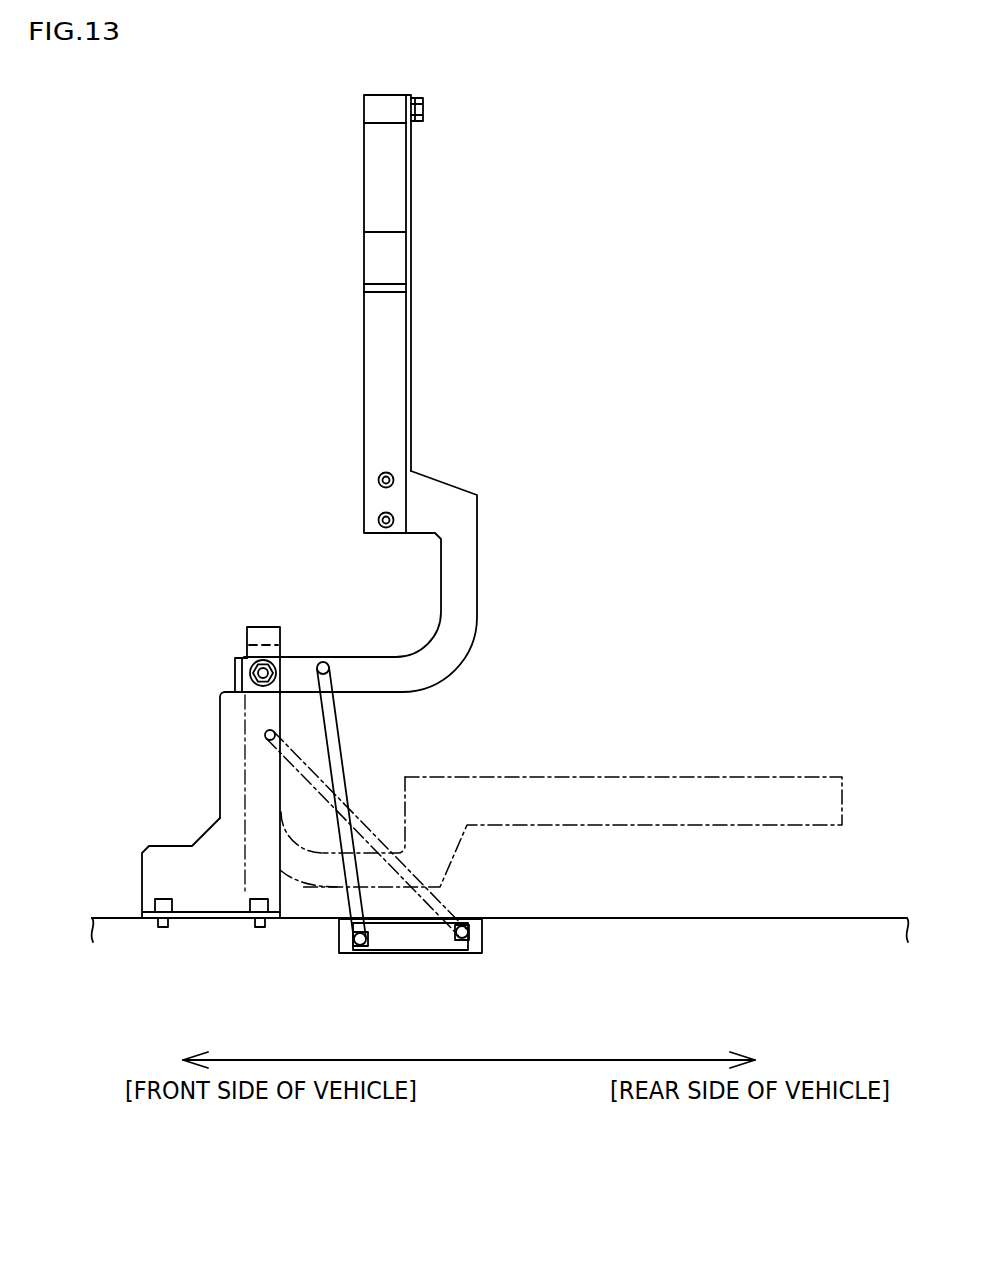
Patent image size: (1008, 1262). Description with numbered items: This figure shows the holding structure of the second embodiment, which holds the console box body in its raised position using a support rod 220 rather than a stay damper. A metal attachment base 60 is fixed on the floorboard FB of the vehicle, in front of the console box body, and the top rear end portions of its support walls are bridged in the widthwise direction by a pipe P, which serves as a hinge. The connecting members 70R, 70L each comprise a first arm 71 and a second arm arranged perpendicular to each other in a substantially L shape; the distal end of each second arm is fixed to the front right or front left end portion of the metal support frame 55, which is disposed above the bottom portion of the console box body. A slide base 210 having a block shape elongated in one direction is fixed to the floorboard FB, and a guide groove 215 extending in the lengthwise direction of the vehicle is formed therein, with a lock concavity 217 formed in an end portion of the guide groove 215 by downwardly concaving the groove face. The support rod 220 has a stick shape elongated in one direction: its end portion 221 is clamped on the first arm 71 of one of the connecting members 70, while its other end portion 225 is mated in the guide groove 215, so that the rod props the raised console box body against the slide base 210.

The support frame 55 is at (387, 317).
The connecting member 70R is at (460, 581).
The connecting member 70L is at (462, 555).
The connecting member 70 is at (308, 819).
The first arm 71 is at (250, 765).
The attachment base 60 is at (160, 873).
The pipe P is at (262, 672).
The end portion 221 is at (313, 690).
The support rod 220 is at (365, 826).
The end portion 225 is at (468, 930).
The slide base 210 is at (463, 945).
The guide groove 215 is at (410, 933).
The lock concavity 217 is at (345, 938).
The floorboard FB is at (120, 920).